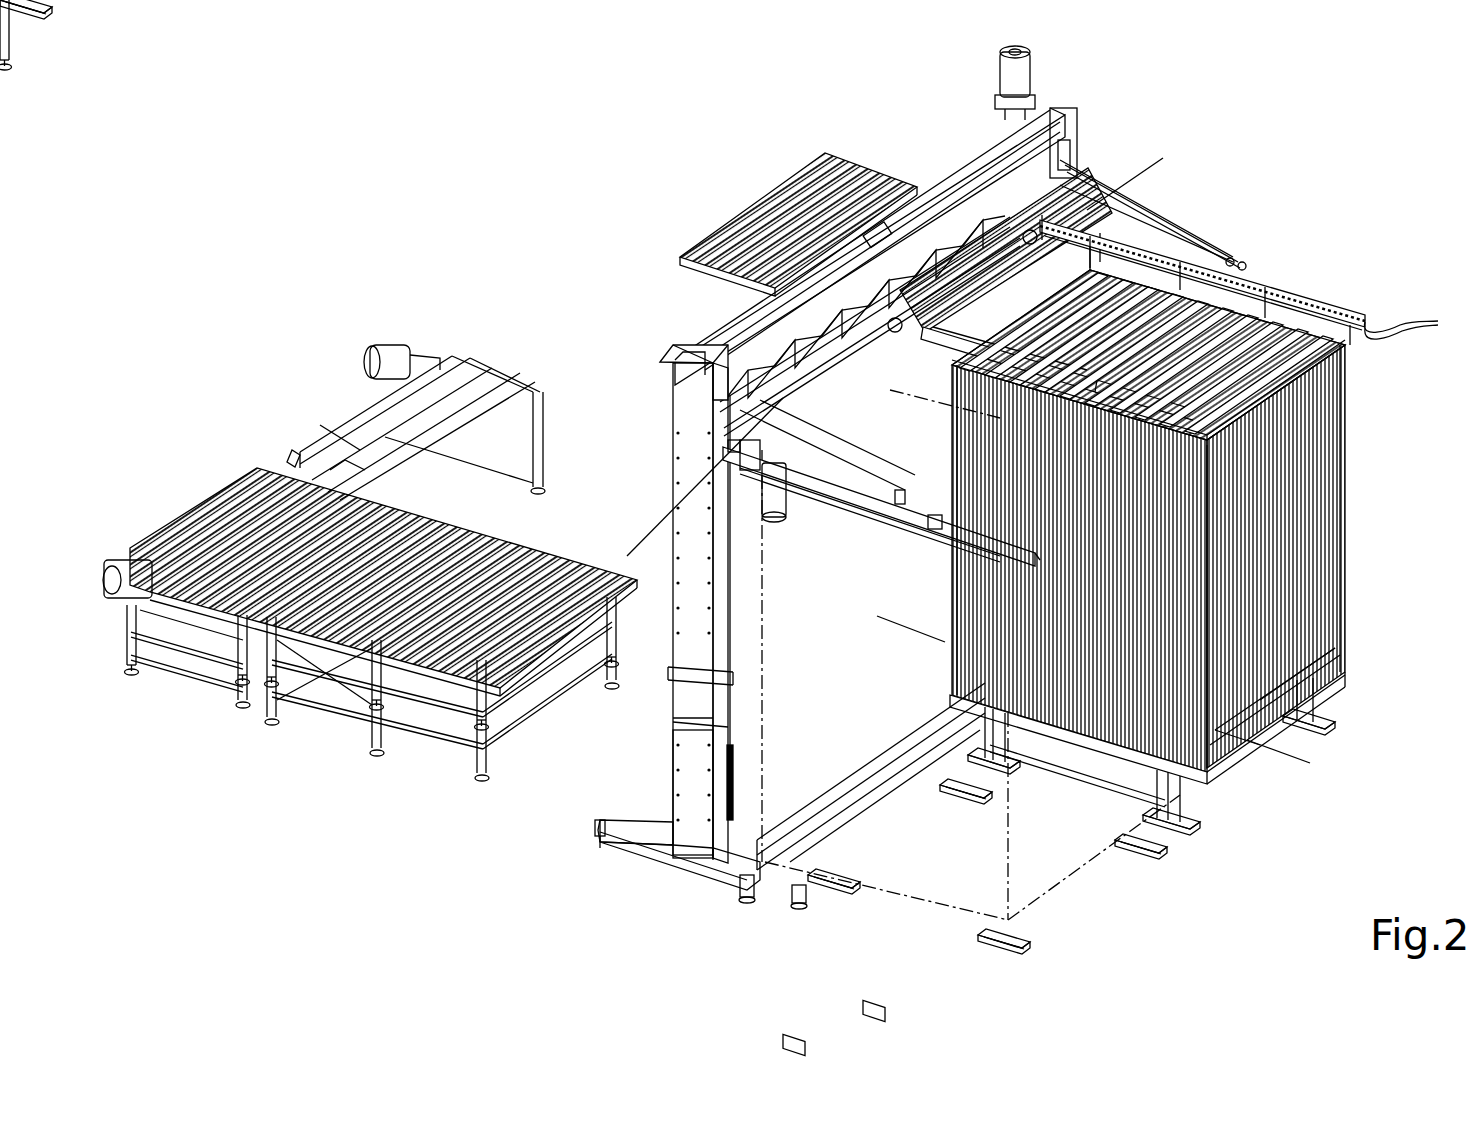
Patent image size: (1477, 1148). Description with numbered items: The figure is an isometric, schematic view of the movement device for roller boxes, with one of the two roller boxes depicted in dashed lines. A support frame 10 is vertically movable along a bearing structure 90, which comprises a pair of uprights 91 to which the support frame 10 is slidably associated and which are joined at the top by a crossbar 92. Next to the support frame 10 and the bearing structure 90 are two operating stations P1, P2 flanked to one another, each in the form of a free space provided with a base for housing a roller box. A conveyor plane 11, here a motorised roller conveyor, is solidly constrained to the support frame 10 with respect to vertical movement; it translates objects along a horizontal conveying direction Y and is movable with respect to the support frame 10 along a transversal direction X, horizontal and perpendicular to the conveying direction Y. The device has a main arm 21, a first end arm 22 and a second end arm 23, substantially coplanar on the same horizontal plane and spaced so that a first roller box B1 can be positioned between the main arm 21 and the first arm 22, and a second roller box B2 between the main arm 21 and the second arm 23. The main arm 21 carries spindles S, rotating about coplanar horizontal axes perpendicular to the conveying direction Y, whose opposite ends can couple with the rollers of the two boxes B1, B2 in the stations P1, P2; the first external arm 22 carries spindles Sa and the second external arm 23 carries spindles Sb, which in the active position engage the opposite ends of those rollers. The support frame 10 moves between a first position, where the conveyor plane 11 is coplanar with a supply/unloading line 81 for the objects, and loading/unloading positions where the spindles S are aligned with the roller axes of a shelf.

The support frame 10 is at (790, 347).
The conveyor plane 11 is at (790, 187).
The main arm 21 is at (1340, 381).
The first end arm 22 is at (1300, 293).
The second end arm 23 is at (845, 505).
The supply/unloading line 81 is at (205, 475).
The bearing structure 90 is at (663, 361).
The uprights 91 is at (700, 738).
The crossbar 92 is at (963, 157).
The spindle rollers S is at (1343, 473).
The spindles of the first external arm Sa is at (1417, 325).
The spindles of the second external arm Sb is at (945, 522).
The first roller box B1 is at (1187, 280).
The second roller box B2 is at (745, 882).
The first operating station P1 is at (1250, 780).
The second operating station P2 is at (990, 870).
The transversal direction X is at (700, 477).
The conveying direction Y is at (906, 615).